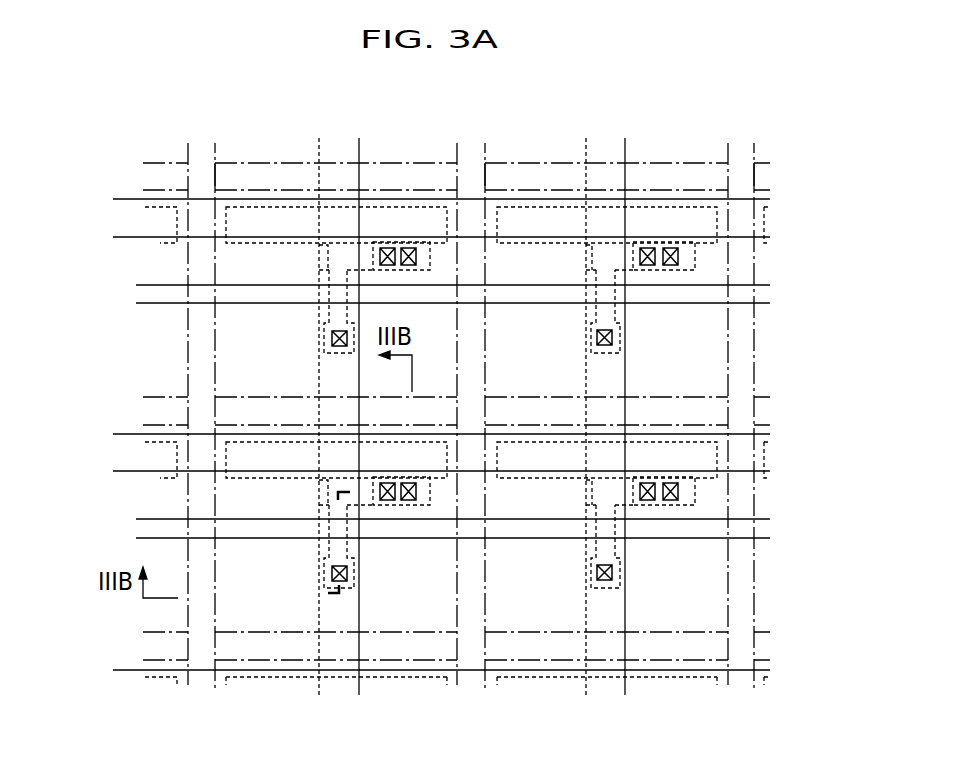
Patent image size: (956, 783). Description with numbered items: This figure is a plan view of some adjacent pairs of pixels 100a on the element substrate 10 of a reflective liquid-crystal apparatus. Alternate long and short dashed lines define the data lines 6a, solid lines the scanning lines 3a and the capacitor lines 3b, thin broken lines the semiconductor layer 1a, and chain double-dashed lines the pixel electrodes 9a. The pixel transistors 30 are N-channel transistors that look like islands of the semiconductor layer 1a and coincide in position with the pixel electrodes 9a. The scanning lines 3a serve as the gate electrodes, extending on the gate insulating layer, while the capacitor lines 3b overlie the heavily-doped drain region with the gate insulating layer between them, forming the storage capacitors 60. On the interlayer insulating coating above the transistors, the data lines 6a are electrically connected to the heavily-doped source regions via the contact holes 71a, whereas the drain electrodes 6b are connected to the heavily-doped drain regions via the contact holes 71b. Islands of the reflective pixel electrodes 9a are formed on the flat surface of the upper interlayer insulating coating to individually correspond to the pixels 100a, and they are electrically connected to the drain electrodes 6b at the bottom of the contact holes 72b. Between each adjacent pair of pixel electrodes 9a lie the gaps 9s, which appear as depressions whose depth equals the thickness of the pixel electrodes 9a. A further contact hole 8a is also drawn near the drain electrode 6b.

The element substrate 10 is at (536, 88).
The gaps 9s is at (773, 162).
The pixel electrodes 9a is at (458, 572).
The capacitor lines 3b is at (113, 198).
The scanning lines 3a is at (136, 283).
The storage capacitors 60 is at (275, 438).
The data lines 6a is at (362, 136).
The drain electrodes 6b is at (430, 493).
The contact holes 71b is at (387, 503).
The contact holes 72b is at (410, 503).
The contact hole 8a is at (412, 485).
The semiconductor layer 1a is at (318, 552).
The contact holes 71a is at (348, 576).
The pixels 100a is at (273, 612).
The pixel transistors 30 is at (406, 590).